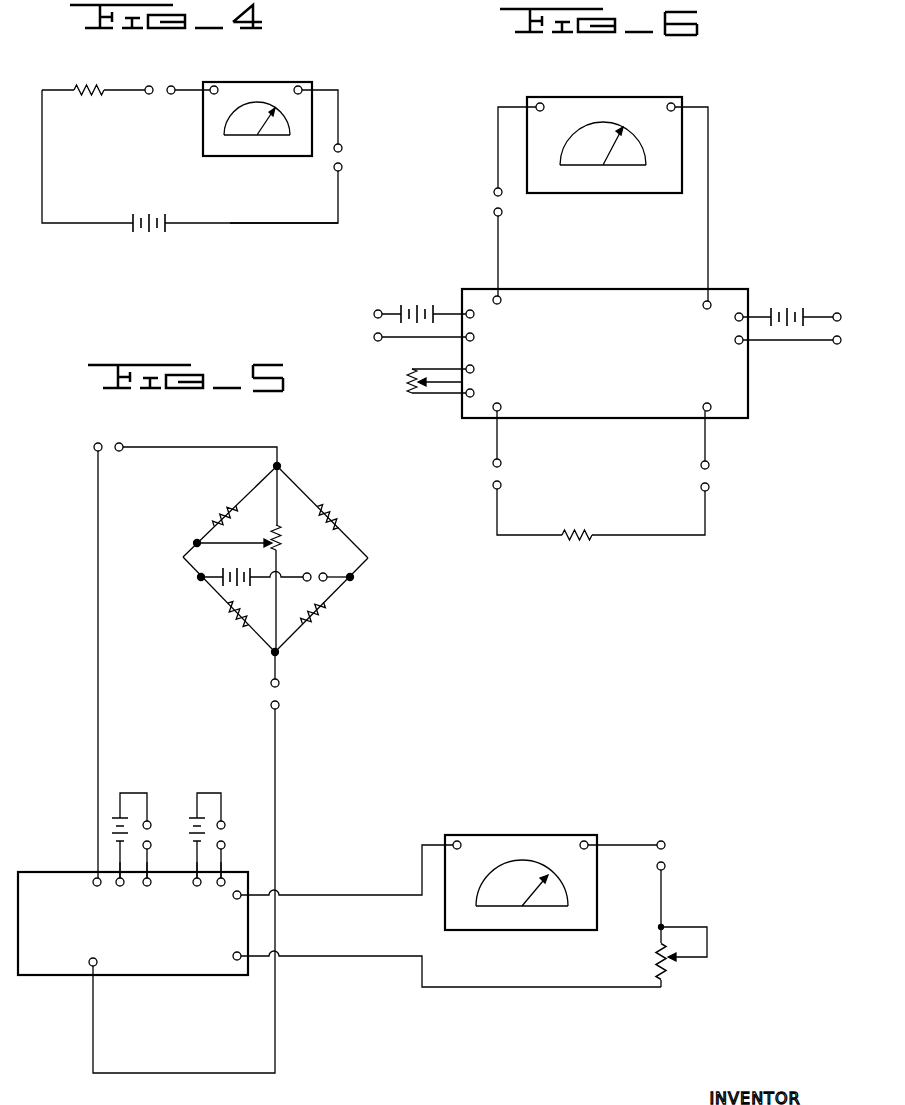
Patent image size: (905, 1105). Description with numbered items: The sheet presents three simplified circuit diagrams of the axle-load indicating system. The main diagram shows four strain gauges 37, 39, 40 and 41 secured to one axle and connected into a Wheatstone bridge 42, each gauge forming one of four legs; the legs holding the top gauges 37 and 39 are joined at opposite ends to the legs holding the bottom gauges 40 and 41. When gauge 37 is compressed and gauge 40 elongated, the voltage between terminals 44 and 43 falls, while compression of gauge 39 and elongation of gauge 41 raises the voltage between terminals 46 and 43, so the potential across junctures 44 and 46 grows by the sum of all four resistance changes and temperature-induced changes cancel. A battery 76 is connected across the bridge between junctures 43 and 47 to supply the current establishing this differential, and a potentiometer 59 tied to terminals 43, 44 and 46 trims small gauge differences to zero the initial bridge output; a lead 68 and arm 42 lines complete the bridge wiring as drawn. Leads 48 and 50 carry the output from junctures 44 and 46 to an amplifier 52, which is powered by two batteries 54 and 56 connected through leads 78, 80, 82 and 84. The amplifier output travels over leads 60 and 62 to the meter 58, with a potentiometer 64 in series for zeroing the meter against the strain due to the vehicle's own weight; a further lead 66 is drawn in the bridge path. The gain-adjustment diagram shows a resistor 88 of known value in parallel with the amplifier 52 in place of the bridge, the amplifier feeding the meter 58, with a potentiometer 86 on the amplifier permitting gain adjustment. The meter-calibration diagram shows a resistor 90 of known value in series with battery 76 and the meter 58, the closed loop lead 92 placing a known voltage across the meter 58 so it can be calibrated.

In FIG. 5, the strain gauge 37 is at (227, 503).
In FIG. 5, the strain gauge 39 is at (320, 624).
In FIG. 5, the strain gauge 40 is at (328, 498).
In FIG. 5, the strain gauge 41 is at (233, 621).
In FIG. 5, the Wheatstone bridge 42 is at (362, 534).
In FIG. 5, the terminal 43 is at (183, 557).
In FIG. 5, the terminal 44 is at (279, 465).
In FIG. 5, the terminal 46 is at (280, 655).
In FIG. 5, the juncture 47 is at (370, 560).
In FIG. 5, the lead from bridge to amplifier 48 is at (192, 443).
In FIG. 5, the lead from bridge to amplifier 50 is at (275, 793).
In FIG. 6, the amplifier 52 is at (633, 289).
In FIG. 5, the amplifier 52 is at (42, 872).
In FIG. 6, the battery 54 is at (410, 306).
In FIG. 5, the battery 54 is at (110, 822).
In FIG. 6, the battery 56 is at (783, 304).
In FIG. 5, the battery 56 is at (178, 822).
In FIG. 4, the meter 58 is at (268, 83).
In FIG. 6, the meter 58 is at (630, 97).
In FIG. 5, the meter 58 is at (537, 835).
In FIG. 5, the potentiometer 59 is at (283, 543).
In FIG. 5, the output lead 60 is at (328, 895).
In FIG. 5, the output lead 62 is at (337, 962).
In FIG. 5, the potentiometer 64 is at (680, 960).
In FIG. 4, the lead 66 is at (265, 223).
In FIG. 5, the lead 66 is at (337, 578).
In FIG. 5, the wiper lead 68 is at (232, 543).
In FIG. 4, the battery 76 is at (143, 215).
In FIG. 5, the battery 76 is at (230, 572).
In FIG. 5, the lead 78 is at (118, 870).
In FIG. 5, the lead 80 is at (149, 856).
In FIG. 5, the lead 82 is at (193, 863).
In FIG. 5, the lead 84 is at (224, 858).
In FIG. 6, the potentiometer 86 is at (407, 376).
In FIG. 6, the resistor 88 is at (595, 532).
In FIG. 4, the resistor 90 is at (84, 86).
In FIG. 4, the circuit lead 92 is at (42, 150).